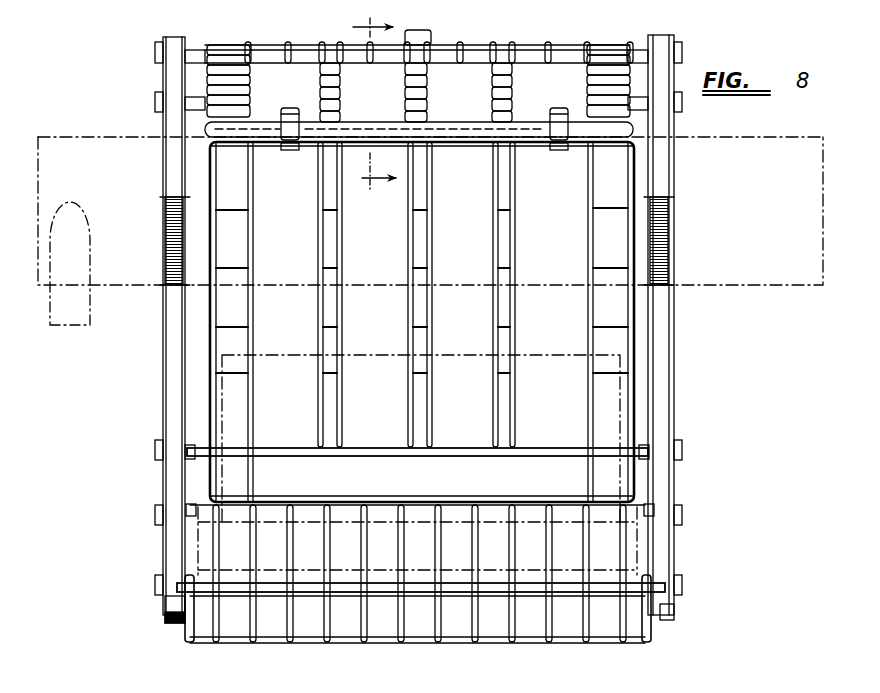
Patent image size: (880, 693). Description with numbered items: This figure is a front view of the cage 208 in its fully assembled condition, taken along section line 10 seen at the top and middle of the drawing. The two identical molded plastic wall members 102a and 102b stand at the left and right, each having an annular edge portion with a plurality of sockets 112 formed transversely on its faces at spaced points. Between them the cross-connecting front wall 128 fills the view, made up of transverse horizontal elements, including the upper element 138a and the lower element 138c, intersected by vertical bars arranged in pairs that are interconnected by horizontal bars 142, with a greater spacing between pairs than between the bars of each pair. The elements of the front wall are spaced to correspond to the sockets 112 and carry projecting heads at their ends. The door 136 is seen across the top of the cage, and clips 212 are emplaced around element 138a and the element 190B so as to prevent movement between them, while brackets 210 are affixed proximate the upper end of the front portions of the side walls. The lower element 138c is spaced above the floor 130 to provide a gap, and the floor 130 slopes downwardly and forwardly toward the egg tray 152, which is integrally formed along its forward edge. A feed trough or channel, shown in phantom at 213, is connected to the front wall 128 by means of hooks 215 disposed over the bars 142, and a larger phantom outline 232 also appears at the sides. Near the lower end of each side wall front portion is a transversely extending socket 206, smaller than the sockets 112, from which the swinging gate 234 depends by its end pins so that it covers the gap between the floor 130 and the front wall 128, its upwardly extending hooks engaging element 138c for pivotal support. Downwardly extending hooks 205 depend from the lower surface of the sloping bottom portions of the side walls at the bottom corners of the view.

The section line 10- 10 is at (361, 108).
The wall member 102a is at (162, 352).
The wall member 102b is at (677, 427).
The sockets 112 is at (677, 58).
The front wall 128 is at (636, 340).
The floor or bottom wall 130 is at (563, 602).
The door 136 is at (472, 97).
The transverse horizontal element 138a is at (448, 153).
The lower element 138c is at (397, 500).
The horizontal bars 142 is at (505, 320).
The egg tray 152 is at (603, 648).
The element 190B is at (393, 90).
The hooks 205 is at (672, 615).
The socket 206 is at (193, 510).
The cage 208 is at (143, 493).
The brackets 210 is at (173, 177).
The clips 212 is at (283, 110).
The feed trough or channel 213 is at (613, 417).
The hooks 215 is at (344, 336).
The phantom object outline 232 is at (768, 270).
The swinging gate 234 is at (643, 558).